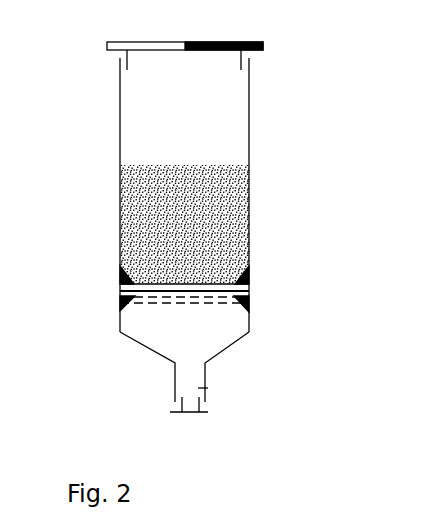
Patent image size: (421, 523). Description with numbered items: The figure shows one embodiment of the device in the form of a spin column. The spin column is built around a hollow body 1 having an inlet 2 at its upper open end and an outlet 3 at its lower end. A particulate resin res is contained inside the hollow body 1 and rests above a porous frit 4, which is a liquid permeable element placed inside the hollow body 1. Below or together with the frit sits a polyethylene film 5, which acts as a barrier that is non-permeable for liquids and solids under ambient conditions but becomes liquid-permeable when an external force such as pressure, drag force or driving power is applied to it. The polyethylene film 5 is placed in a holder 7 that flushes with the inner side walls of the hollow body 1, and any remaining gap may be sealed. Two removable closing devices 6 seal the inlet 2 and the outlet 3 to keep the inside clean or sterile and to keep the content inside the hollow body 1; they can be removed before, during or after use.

The hollow body 1 is at (120, 207).
The inlet 2 is at (157, 65).
The outlet 3 is at (205, 390).
The porous frit 4 is at (212, 306).
The polyethylene film 5 is at (207, 288).
The removable closing device 6 is at (246, 42).
The holder 7 is at (120, 278).
The particulate resin res is at (222, 210).